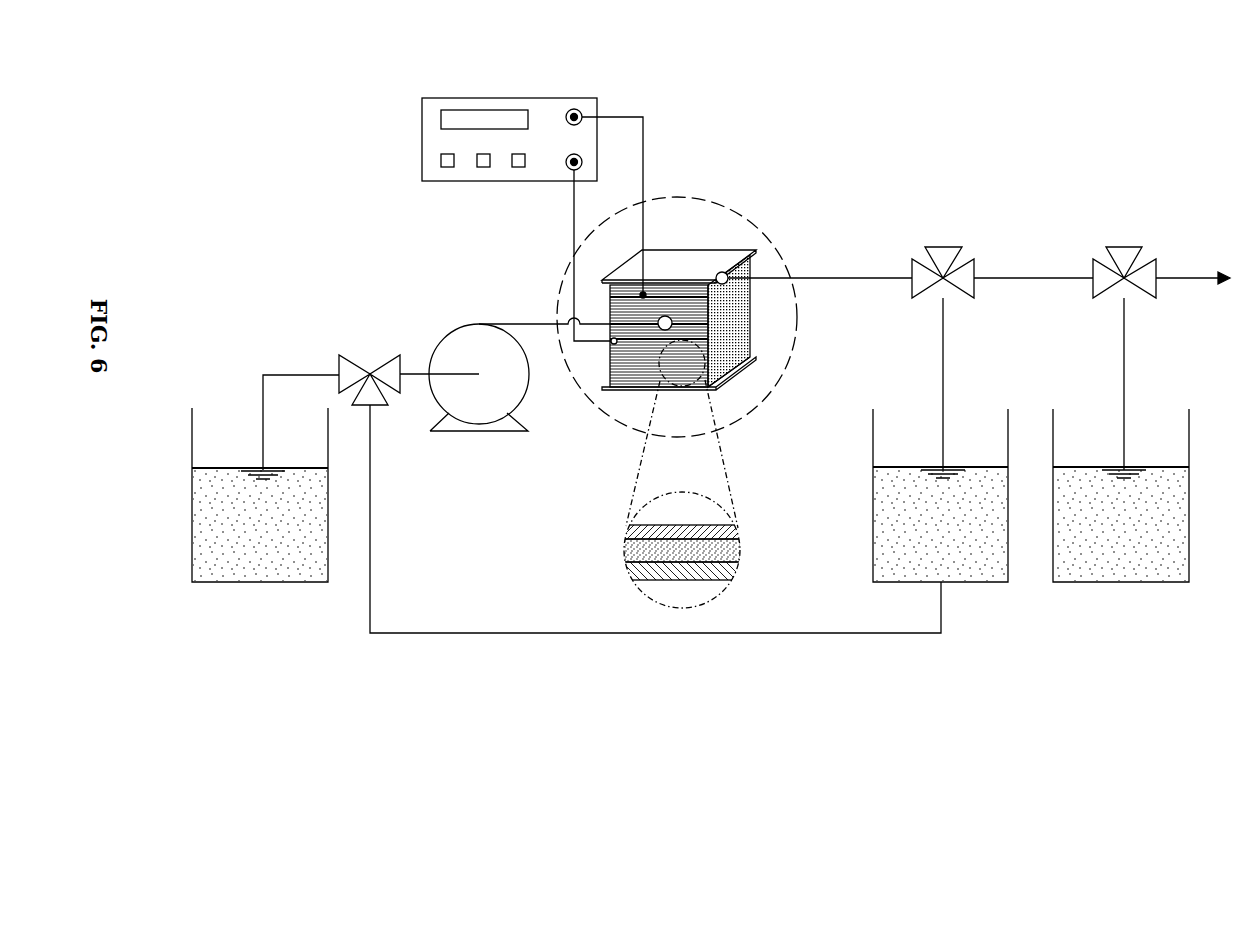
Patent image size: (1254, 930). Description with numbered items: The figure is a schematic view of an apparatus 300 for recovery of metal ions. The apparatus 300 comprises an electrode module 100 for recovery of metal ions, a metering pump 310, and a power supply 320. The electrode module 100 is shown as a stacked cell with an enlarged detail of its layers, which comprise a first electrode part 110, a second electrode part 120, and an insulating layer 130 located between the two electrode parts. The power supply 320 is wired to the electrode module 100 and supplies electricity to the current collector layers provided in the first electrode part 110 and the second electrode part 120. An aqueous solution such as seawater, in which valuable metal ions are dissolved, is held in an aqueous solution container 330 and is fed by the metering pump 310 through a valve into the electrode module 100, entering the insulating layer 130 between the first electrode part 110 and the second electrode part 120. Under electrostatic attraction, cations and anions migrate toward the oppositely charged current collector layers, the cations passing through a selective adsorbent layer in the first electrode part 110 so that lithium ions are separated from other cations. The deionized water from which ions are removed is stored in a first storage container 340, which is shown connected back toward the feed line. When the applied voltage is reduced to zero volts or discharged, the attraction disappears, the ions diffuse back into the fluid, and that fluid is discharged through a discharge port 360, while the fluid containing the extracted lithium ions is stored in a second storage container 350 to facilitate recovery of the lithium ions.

The electrode module for recovery of metal ions 100 is at (715, 236).
The first electrode part 110 is at (735, 530).
The second electrode part 120 is at (735, 578).
The insulating layer 130 is at (630, 552).
The apparatus for recovery of metal ions 300 is at (741, 53).
The metering pump 310 is at (461, 324).
The power supply 320 is at (422, 112).
The aqueous solution container 330 is at (260, 583).
The first storage container 340 is at (968, 583).
The second storage container 350 is at (1150, 583).
The discharge port 360 is at (1197, 278).